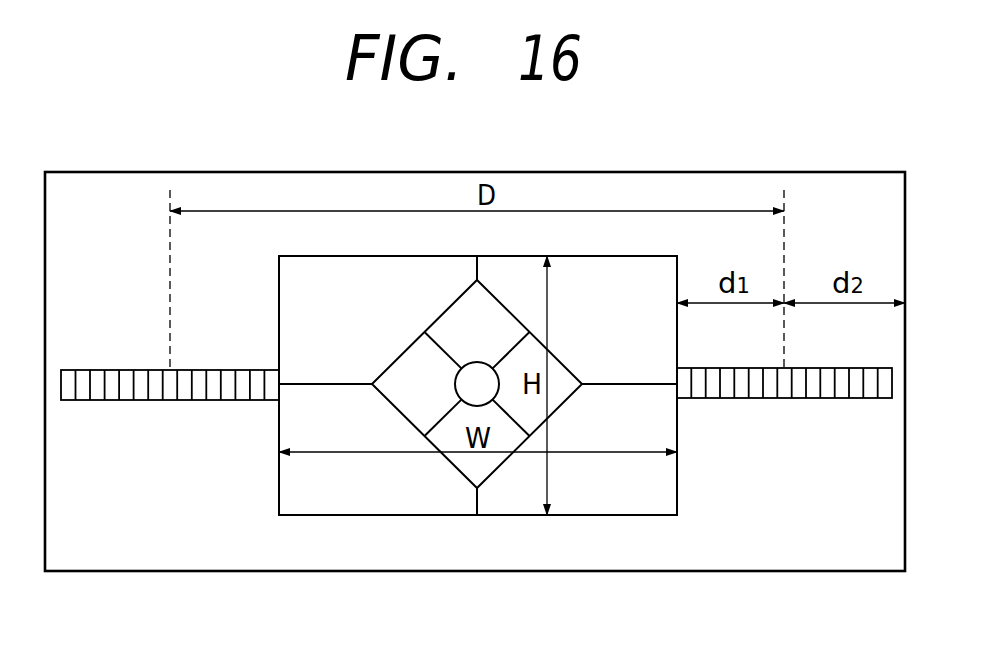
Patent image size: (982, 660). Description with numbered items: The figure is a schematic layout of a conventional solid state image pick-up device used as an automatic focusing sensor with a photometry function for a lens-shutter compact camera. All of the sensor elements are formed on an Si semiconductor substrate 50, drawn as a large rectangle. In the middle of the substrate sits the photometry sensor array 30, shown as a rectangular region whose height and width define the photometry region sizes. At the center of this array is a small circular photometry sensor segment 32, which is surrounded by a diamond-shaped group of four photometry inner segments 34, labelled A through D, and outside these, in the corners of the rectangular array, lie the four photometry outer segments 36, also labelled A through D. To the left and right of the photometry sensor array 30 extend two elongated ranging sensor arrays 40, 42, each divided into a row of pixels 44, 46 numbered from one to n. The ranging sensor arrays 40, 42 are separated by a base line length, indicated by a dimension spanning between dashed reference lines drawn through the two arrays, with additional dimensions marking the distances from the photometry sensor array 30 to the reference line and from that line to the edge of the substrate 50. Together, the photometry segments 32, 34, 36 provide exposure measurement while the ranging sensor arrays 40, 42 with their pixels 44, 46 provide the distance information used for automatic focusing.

The photometry sensor array 30 is at (474, 367).
The photometry sensor segment 32 is at (477, 362).
The photometry inner segments 34 is at (620, 270).
The photometry outer segments 36 is at (478, 385).
The ranging sensor array 40 is at (170, 416).
The ranging sensor array 42 is at (784, 415).
The pixels 44 is at (201, 400).
The pixels 46 is at (873, 428).
The Si semiconductor substrate 50 is at (493, 556).